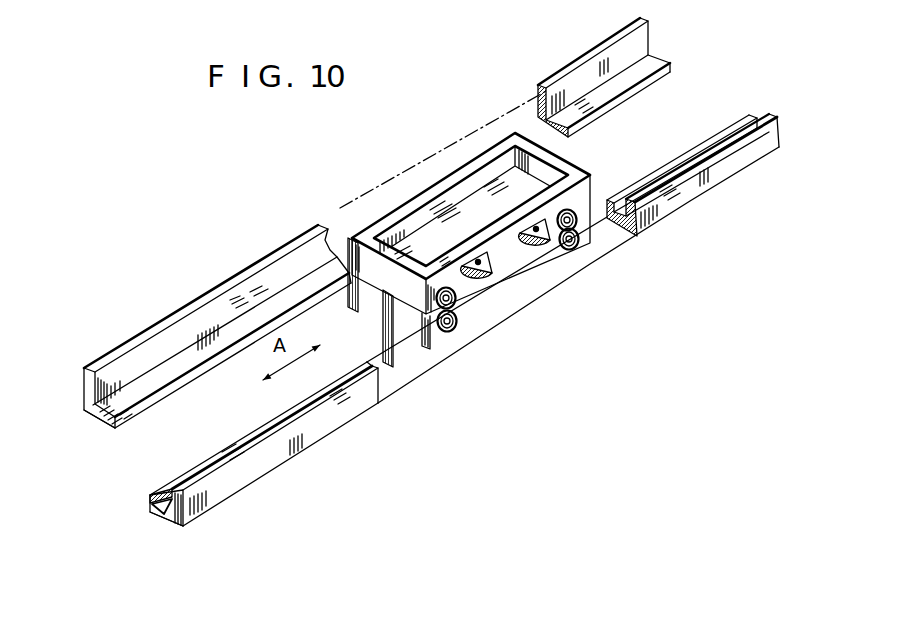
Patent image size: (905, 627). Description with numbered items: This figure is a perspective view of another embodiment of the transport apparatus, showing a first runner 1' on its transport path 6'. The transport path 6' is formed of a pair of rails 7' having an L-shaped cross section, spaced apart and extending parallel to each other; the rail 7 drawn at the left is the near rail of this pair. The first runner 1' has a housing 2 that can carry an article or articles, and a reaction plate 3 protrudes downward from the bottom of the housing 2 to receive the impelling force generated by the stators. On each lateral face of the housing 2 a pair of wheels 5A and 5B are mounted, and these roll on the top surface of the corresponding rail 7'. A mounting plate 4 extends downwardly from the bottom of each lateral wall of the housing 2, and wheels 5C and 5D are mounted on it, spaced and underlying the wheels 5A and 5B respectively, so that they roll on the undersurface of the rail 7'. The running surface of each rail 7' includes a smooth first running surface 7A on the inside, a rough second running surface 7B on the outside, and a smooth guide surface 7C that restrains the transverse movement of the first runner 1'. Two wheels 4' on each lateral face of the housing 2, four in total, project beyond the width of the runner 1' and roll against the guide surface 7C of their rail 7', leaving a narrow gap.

The first runner 1' is at (471, 224).
The housing 2 is at (510, 257).
The reaction plate 3 is at (410, 365).
The mounting plate 4 is at (339, 283).
The wheel 4' is at (515, 293).
The wheel 5A is at (456, 310).
The wheel 5B is at (578, 210).
The wheel 5C is at (446, 333).
The wheel 5D is at (578, 250).
The transport path 6' is at (573, 222).
The guide rail 7 is at (217, 326).
The rail 7' is at (658, 132).
The first running surface 7A is at (158, 387).
The second running surface 7B is at (90, 410).
The guide surface 7C is at (187, 333).